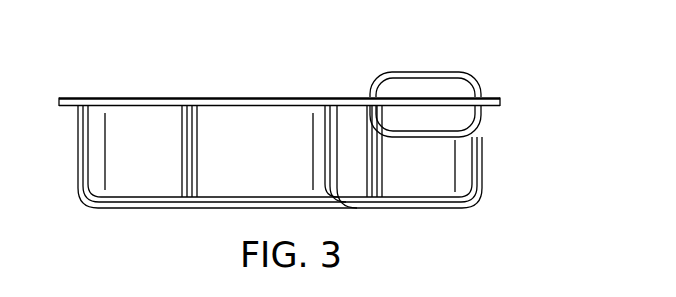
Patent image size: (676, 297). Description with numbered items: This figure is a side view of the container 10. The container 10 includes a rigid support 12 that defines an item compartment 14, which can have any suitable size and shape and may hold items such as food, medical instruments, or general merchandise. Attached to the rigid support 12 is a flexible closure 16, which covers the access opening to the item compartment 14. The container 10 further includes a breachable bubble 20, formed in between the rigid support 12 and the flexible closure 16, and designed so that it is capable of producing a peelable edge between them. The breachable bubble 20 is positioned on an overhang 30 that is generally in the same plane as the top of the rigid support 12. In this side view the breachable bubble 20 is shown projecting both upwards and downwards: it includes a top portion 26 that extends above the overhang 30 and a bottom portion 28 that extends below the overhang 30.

The container 10 is at (90, 70).
The rigid support 12 is at (143, 187).
The item compartment 14 is at (128, 152).
The flexible closure 16 is at (153, 97).
The breachable bubble 20 is at (443, 88).
The top portion 26 is at (385, 86).
The bottom portion 28 is at (460, 111).
The overhang 30 is at (327, 97).